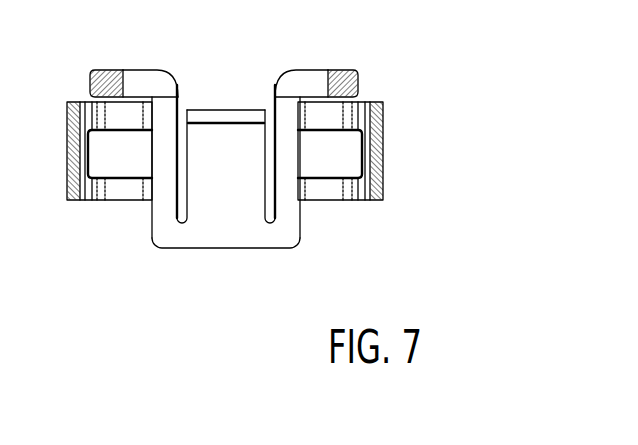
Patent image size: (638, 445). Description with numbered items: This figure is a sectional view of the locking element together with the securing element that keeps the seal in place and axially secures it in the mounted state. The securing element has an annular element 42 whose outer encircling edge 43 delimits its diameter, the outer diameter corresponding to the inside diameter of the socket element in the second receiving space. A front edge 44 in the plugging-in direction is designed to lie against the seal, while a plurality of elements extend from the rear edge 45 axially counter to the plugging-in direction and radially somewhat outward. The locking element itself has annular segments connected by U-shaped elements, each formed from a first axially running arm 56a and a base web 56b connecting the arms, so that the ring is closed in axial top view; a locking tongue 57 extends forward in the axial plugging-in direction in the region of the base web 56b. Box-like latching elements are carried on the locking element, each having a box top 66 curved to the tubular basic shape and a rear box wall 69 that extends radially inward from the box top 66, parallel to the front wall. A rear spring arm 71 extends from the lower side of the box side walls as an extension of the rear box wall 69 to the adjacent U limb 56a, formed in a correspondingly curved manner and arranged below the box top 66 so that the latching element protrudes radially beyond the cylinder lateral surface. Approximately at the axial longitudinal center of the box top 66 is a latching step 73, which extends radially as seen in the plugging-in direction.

The annular element 42 is at (349, 61).
The outer encircling edge 43 is at (90, 81).
The front edge 44 is at (106, 70).
The rear edge 45 is at (114, 95).
The axially running arm 56a is at (163, 187).
The base web 56b is at (232, 242).
The locking tongue 57 is at (237, 178).
The box top 66 is at (67, 138).
The rear box wall 69 is at (72, 201).
The rear spring arm 71 is at (326, 201).
The latching step 73 is at (67, 161).